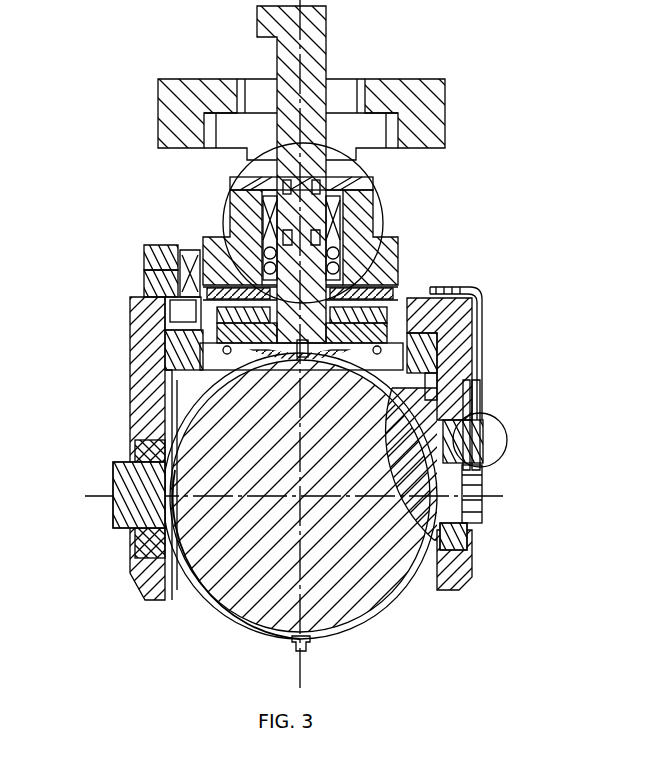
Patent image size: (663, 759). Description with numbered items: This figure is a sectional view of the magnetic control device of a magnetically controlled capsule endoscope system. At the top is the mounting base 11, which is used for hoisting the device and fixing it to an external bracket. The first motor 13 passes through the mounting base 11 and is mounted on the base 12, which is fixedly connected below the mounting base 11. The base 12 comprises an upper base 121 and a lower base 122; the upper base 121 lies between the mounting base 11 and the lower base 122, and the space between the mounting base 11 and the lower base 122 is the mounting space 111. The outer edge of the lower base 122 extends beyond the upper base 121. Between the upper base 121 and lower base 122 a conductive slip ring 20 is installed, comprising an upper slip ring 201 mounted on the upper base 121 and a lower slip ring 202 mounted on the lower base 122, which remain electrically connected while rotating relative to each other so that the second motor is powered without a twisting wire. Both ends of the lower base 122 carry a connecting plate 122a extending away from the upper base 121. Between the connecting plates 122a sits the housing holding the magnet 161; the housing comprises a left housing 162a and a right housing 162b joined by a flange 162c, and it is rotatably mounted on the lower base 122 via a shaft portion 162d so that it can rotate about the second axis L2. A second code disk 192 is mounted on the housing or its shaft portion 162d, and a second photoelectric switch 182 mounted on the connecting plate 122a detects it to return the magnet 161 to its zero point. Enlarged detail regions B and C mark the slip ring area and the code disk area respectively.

The first motor 13 is at (326, 38).
The mounting base 11 is at (445, 110).
The mounting space 111 is at (388, 184).
The base 12 is at (379, 292).
The upper base 121 is at (383, 228).
The lower base 122 is at (379, 334).
The connecting plate 122a is at (463, 328).
The detail region B is at (226, 218).
The conductive slip ring 20 is at (121, 273).
The upper slip ring 201 is at (200, 296).
The lower slip ring 202 is at (203, 300).
The second axis L2 is at (282, 498).
The magnet 161 is at (382, 592).
The left housing 162a is at (250, 627).
The right housing 162b is at (357, 627).
The flange 162c is at (304, 650).
The shaft portion 162d is at (114, 478).
The detail region C is at (492, 424).
The second photoelectric switch 182 is at (486, 440).
The second code disk 192 is at (482, 478).